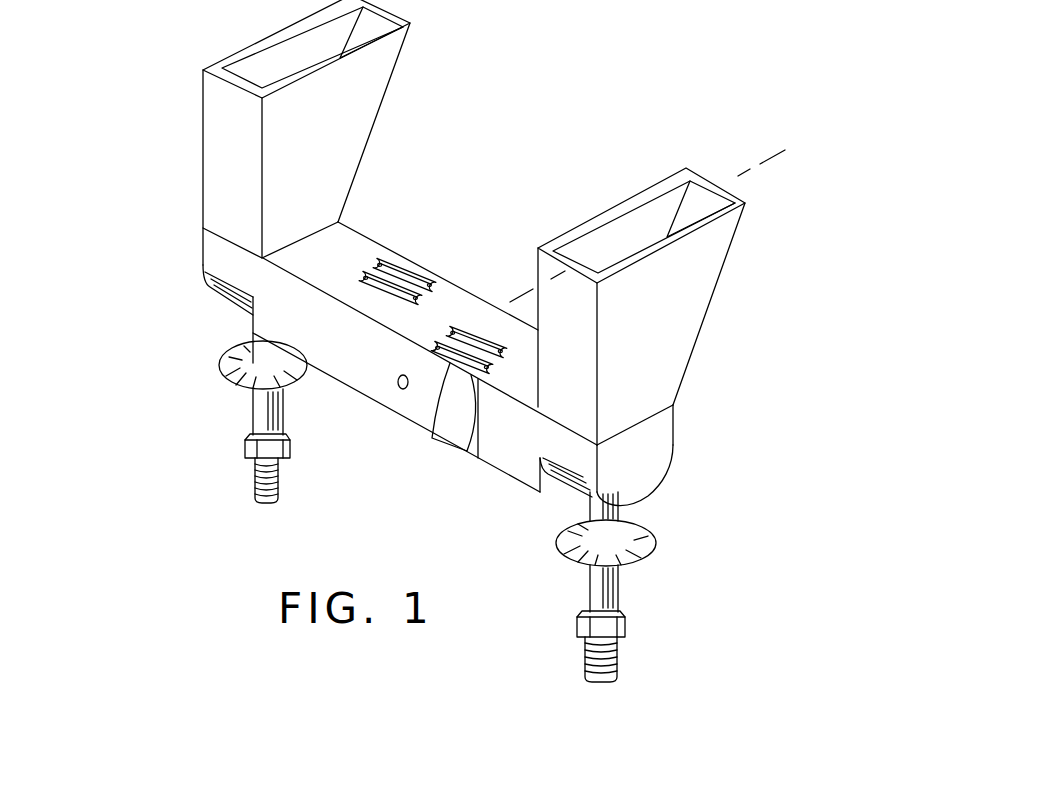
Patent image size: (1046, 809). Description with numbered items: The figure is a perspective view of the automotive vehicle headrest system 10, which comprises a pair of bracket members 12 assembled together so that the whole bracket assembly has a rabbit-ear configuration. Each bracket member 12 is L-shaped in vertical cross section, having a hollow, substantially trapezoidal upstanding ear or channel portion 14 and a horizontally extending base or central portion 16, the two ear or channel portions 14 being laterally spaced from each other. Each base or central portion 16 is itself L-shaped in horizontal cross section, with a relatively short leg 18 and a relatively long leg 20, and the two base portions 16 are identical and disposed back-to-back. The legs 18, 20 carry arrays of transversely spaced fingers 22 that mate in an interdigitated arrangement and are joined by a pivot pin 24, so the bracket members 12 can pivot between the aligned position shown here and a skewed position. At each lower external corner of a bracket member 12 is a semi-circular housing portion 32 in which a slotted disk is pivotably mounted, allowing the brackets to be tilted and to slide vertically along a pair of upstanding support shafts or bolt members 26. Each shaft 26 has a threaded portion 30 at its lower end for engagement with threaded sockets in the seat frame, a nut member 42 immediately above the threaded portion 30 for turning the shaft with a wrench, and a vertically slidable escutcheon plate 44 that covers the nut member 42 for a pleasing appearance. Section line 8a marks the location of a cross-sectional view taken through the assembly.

The automotive vehicle headrest system 10 is at (800, 266).
The bracket member 12 is at (228, 248).
The upstanding ear or channel portion 14 is at (372, 100).
The horizontally extending base or central portion 16 is at (353, 372).
The relatively short leg 18 is at (353, 240).
The relatively long leg 20 is at (490, 318).
The fingers 22 is at (418, 262).
The pivot pin 24 is at (401, 390).
The upstanding support shaft or bolt member 26 is at (258, 412).
The threaded portion 30 is at (253, 492).
The semi-circular housing portion 32 is at (637, 487).
The nut member 42 is at (248, 452).
The escutcheon plate 44 is at (245, 377).
The section line 8a is at (521, 287).